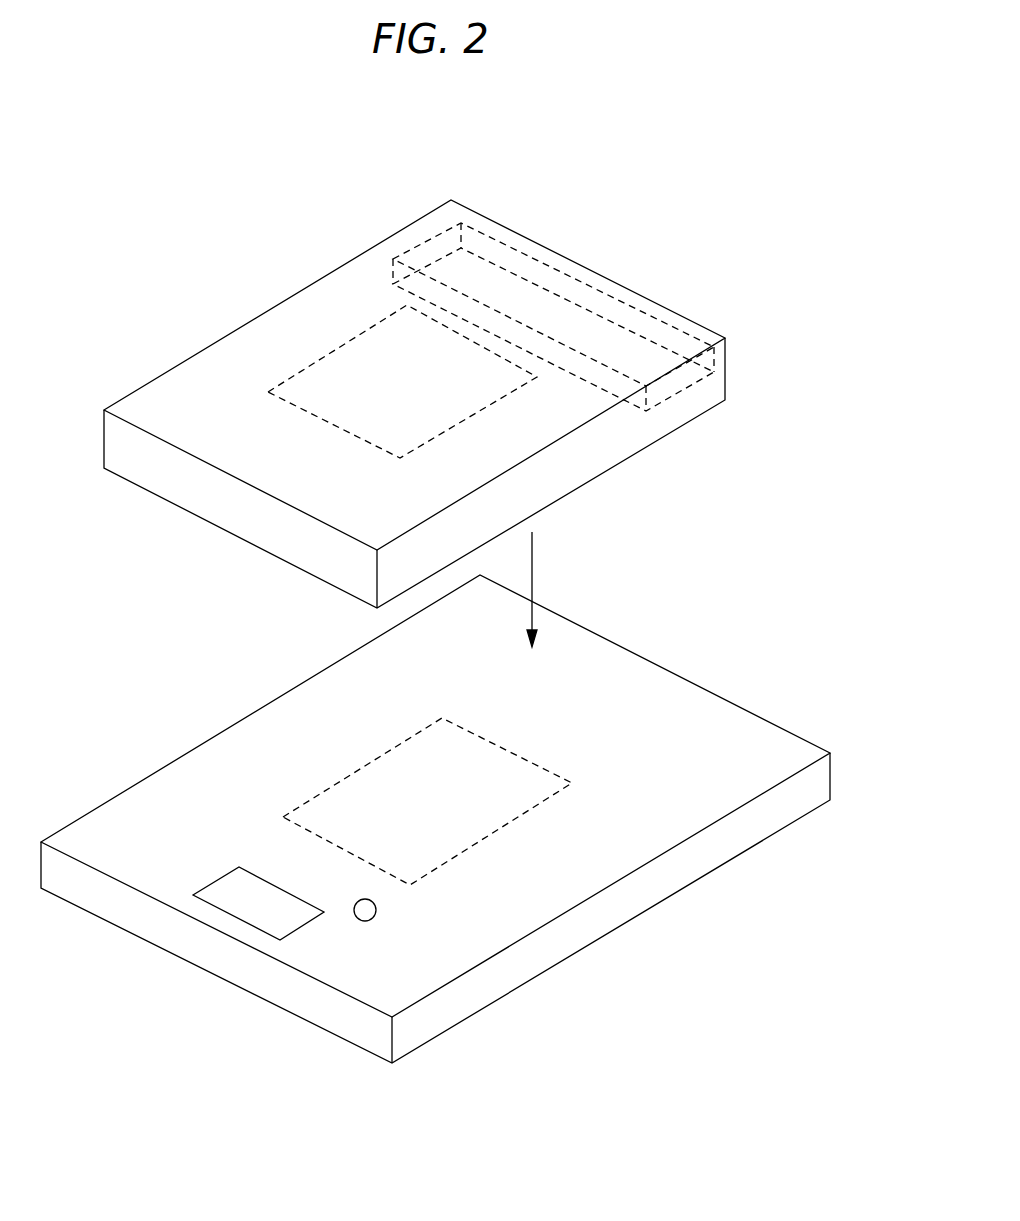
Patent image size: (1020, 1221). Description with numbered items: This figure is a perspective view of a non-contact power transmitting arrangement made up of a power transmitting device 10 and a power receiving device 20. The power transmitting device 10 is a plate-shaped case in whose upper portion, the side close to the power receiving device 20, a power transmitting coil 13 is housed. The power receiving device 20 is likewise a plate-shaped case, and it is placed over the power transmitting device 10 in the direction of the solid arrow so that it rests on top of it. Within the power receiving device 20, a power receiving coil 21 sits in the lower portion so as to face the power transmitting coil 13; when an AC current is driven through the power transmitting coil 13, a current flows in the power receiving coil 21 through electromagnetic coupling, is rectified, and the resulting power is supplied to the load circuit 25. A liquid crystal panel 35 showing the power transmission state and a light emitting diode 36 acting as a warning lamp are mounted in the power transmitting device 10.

The power transmitting device 10 is at (127, 785).
The power transmitting coil 13 is at (457, 820).
The power receiving device 20 is at (423, 213).
The power receiving coil 21 is at (347, 367).
The load circuit 25 is at (537, 293).
The liquid crystal panel 35 is at (216, 880).
The light emitting diode 36 is at (366, 921).